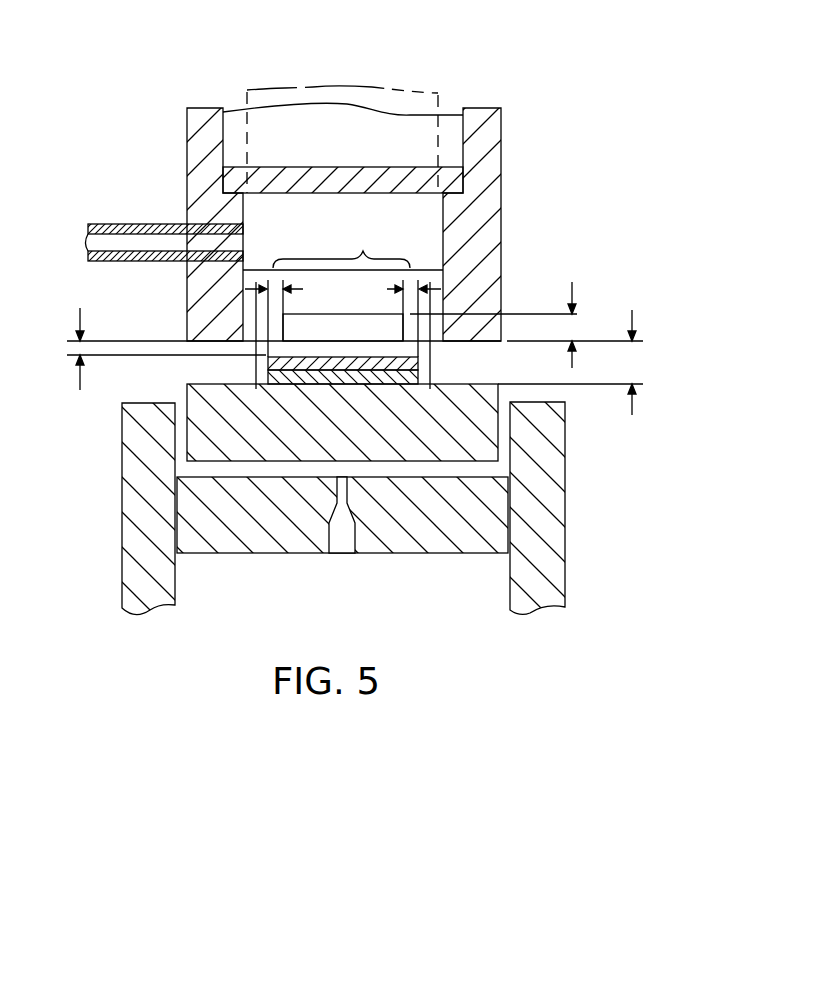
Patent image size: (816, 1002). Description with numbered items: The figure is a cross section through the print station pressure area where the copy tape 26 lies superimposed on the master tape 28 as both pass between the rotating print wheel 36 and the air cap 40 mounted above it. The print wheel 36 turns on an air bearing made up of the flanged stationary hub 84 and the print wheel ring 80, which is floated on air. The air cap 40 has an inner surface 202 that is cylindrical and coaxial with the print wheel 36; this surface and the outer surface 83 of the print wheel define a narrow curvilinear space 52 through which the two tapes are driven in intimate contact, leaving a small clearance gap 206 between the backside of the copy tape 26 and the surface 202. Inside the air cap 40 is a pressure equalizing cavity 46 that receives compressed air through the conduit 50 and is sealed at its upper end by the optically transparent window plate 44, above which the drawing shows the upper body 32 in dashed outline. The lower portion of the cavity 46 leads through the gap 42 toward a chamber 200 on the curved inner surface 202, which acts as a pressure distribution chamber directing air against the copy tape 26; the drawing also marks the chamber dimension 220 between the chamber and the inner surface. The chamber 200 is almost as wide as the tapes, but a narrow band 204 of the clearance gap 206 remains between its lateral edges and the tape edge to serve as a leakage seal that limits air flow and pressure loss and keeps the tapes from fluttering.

The ram body 32 is at (372, 88).
The optically transparent window plate 44 is at (402, 113).
The air cap 40 is at (503, 136).
The conduit 50 is at (147, 223).
The pressure equalizing cavity 46 is at (325, 220).
The narrow band 204 is at (343, 261).
The gap 42 is at (367, 302).
The chamber 200 is at (352, 327).
The preform height 220 is at (573, 325).
The clearance gap 206 is at (73, 347).
The curvilinear space 52 is at (630, 365).
The inner surface 202 is at (495, 333).
The copy tape 26 is at (418, 362).
The master tape 28 is at (415, 372).
The outer surface 83 is at (197, 384).
The print wheel ring 80 is at (238, 462).
The flanged stationary hub 84 is at (310, 553).
The print wheel 36 is at (565, 578).